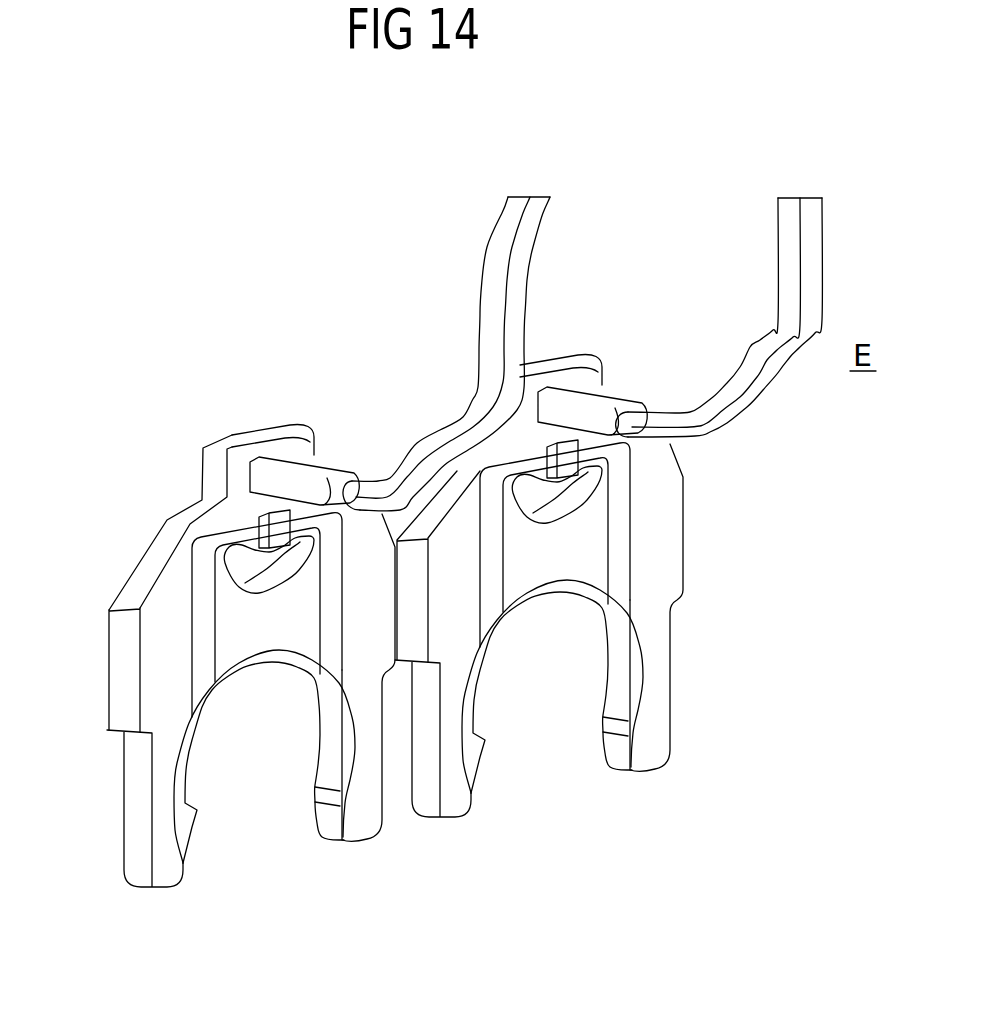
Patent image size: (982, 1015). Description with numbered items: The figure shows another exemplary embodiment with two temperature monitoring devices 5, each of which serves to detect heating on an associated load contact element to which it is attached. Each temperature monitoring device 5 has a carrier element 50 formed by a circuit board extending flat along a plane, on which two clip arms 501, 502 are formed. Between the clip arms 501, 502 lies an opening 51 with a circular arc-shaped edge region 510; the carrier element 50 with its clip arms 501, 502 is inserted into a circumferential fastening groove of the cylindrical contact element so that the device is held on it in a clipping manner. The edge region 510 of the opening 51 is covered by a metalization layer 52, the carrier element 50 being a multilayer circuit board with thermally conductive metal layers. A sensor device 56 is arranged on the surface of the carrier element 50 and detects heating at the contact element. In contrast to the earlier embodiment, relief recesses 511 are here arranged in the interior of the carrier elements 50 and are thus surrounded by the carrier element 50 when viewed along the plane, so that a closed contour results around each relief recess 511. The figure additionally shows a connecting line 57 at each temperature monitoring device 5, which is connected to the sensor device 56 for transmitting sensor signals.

The temperature monitoring device 5 is at (411, 672).
The carrier element 50 is at (411, 663).
The clip arm 501 is at (663, 760).
The clip arm 502 is at (452, 803).
The opening 51 is at (411, 664).
The edge region 510 is at (485, 741).
The relief recess 511 is at (570, 507).
The metalization layer 52 is at (382, 775).
The sensor device 56 is at (567, 458).
The connecting line 57 is at (383, 498).